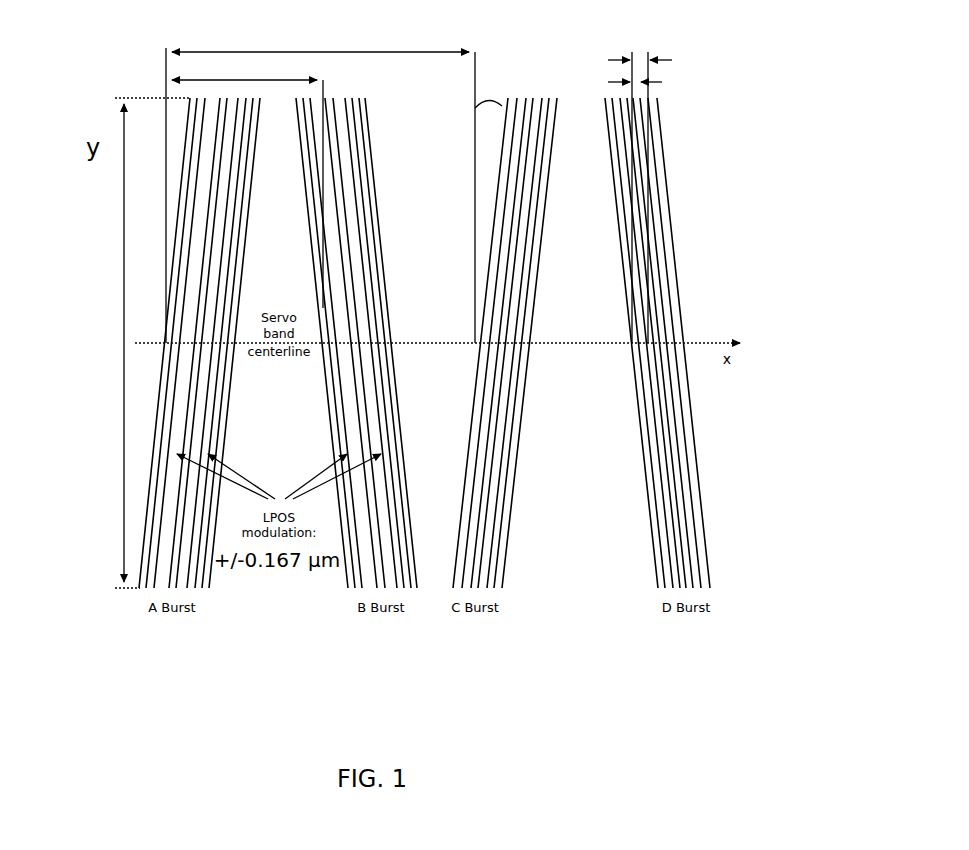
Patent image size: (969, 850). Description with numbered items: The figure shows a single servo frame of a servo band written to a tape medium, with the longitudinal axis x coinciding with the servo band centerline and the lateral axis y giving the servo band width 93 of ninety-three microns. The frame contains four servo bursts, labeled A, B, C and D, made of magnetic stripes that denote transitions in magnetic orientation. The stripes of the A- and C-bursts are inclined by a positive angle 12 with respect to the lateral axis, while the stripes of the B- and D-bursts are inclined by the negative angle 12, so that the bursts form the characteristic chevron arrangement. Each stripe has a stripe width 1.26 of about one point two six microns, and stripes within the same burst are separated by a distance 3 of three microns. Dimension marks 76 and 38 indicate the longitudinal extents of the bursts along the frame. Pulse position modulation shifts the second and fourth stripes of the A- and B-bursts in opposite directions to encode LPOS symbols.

The servo band width dimension (76 µm) 76 is at (320, 32).
The half servo band width dimension (38 µm) 38 is at (244, 70).
The servo band width 93 is at (110, 343).
The stripe inclination angle 12 is at (492, 97).
The distance between stripes 3 is at (675, 192).
The stripe width 1.26 is at (694, 95).